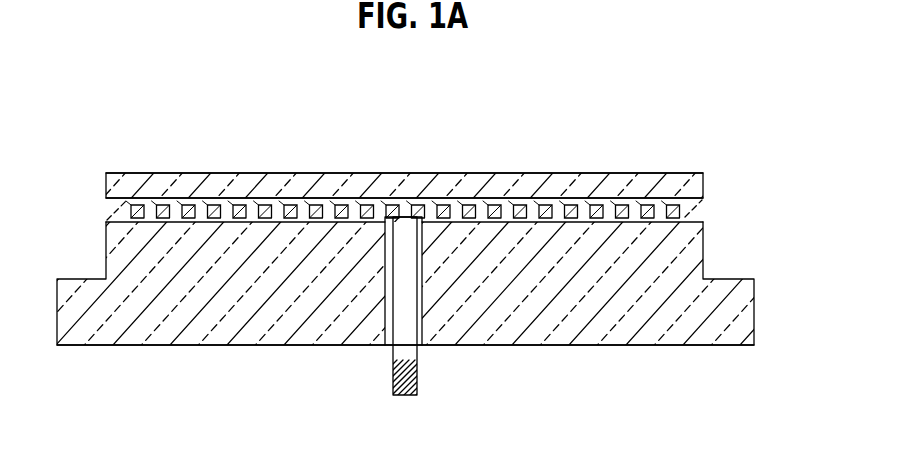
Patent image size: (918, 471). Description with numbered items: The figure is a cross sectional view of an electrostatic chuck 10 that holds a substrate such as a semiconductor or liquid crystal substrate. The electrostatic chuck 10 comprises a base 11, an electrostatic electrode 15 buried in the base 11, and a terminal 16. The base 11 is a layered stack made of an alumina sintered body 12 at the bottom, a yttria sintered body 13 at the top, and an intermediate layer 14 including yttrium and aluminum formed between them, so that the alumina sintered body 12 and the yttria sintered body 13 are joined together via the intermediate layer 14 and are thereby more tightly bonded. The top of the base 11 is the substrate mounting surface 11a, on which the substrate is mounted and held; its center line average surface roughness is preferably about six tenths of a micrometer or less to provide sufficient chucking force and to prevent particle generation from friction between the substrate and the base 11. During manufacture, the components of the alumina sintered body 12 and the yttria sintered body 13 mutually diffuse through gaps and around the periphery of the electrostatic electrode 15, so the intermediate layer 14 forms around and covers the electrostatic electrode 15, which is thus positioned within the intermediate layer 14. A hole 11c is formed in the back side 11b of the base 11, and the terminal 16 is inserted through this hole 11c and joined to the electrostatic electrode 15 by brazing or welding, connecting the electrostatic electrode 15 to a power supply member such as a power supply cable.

The electrostatic chuck 10 is at (673, 143).
The base 11 is at (802, 162).
The substrate mounting surface 11a is at (313, 173).
The back side 11b is at (602, 347).
The hole 11c is at (422, 330).
The alumina sintered body 12 is at (754, 305).
The yttria sintered body 13 is at (693, 182).
The intermediate layer 14 is at (692, 205).
The electrostatic electrode 15 is at (590, 203).
The terminal 16 is at (393, 362).